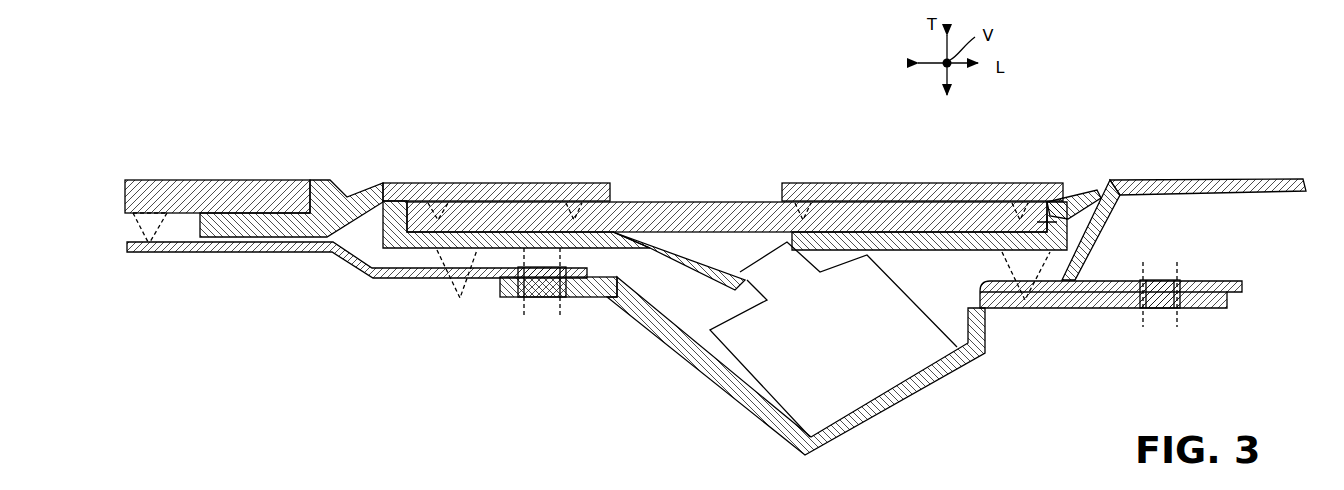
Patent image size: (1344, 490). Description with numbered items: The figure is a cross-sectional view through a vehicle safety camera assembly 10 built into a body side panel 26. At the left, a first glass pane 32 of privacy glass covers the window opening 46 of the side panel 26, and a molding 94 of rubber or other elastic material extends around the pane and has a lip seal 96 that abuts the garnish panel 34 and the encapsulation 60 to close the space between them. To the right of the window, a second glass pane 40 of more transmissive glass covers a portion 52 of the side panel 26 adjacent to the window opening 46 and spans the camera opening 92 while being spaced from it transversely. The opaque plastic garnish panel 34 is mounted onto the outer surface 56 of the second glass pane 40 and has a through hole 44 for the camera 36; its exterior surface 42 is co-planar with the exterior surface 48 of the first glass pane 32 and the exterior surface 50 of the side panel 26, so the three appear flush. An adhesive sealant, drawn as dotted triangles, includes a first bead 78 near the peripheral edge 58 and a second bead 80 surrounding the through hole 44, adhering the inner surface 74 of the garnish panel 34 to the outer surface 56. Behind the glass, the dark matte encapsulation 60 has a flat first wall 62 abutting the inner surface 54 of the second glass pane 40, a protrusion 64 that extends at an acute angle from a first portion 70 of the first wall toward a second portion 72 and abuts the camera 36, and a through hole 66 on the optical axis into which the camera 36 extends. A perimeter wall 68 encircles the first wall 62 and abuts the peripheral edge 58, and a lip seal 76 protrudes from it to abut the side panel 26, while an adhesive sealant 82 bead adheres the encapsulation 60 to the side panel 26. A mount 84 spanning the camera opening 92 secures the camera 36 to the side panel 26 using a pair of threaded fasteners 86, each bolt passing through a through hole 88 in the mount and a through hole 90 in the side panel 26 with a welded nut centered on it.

The safety camera assembly 10 is at (170, 70).
The side panel 26 is at (176, 262).
The first glass pane 32 is at (205, 170).
The garnish panel 34 is at (411, 170).
The camera 36 is at (860, 397).
The second glass pane 40 is at (907, 175).
The exterior surface 42 is at (857, 182).
The through hole 44 is at (609, 200).
The window opening 46 is at (127, 250).
The exterior surface 48 is at (243, 178).
The exterior surface 50 is at (1195, 180).
The portion 52 is at (398, 278).
The inner surface 54 is at (650, 233).
The outer surface 56 is at (697, 202).
The peripheral edge 58 is at (1103, 208).
The encapsulation 60 is at (931, 264).
The first wall 62 is at (783, 279).
The protrusion 64 is at (693, 263).
The through hole 66 is at (760, 282).
The perimeter wall 68 is at (392, 225).
The first portion 70 is at (592, 297).
The second portion 72 is at (905, 250).
The inner surface 74 is at (503, 203).
The lip seal 76 is at (1090, 186).
The first bead 78 is at (437, 182).
The second bead 80 is at (568, 203).
The adhesive sealant 82 is at (460, 298).
The mount 84 is at (815, 452).
The threaded fasteners 86 is at (525, 302).
The through hole 88 is at (545, 300).
The through hole 90 is at (562, 267).
The camera opening 92 is at (985, 283).
The molding 94 is at (323, 178).
The lip seal 96 is at (364, 182).